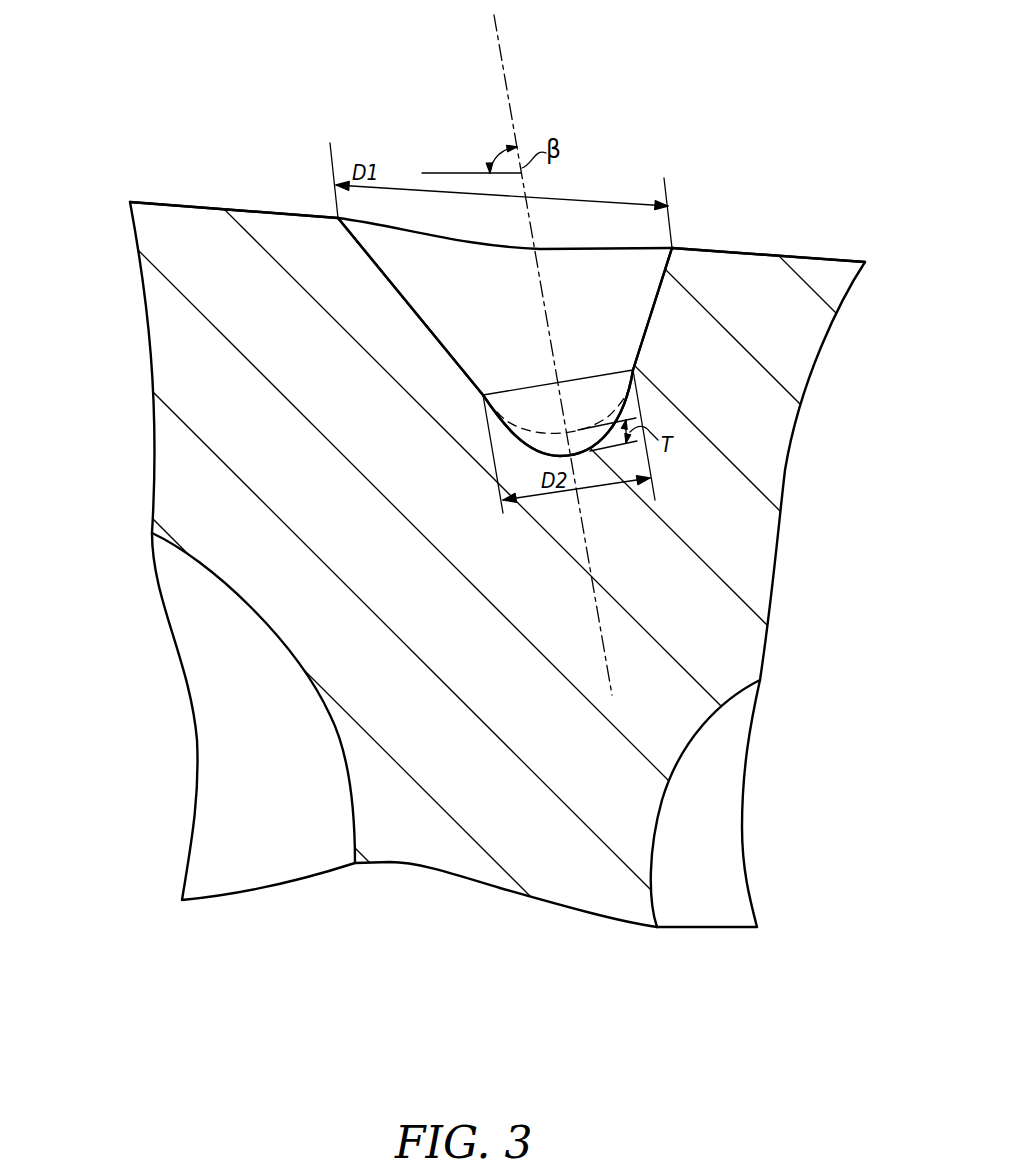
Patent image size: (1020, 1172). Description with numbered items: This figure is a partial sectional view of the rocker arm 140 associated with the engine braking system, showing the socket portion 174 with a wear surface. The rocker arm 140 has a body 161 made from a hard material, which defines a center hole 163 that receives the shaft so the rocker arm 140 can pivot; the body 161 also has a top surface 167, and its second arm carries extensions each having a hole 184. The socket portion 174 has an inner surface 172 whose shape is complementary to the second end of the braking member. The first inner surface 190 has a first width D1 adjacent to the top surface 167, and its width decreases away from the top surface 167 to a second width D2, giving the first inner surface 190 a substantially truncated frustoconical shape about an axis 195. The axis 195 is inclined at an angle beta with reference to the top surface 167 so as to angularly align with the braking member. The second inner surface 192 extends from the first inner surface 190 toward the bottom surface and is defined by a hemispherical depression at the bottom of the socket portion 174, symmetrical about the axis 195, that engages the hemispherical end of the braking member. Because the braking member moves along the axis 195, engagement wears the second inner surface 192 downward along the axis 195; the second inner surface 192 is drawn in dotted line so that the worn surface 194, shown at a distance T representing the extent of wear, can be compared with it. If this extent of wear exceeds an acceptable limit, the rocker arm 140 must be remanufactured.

The rocker arm 140 is at (778, 103).
The body 161 is at (446, 629).
The center hole 163 is at (227, 578).
The top surface 167 is at (185, 203).
The inner surface 172 is at (657, 291).
The socket portion 174 is at (645, 243).
The hole 184 is at (687, 755).
The first inner surface 190 is at (424, 318).
The second inner surface 192 is at (601, 414).
The worn surface 194 is at (551, 437).
The axis 195 is at (502, 71).